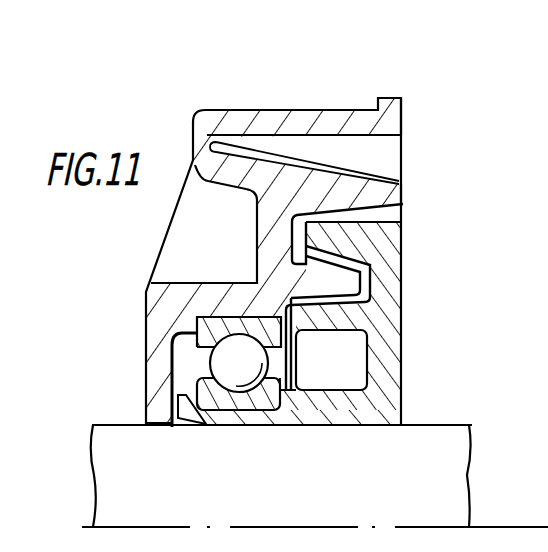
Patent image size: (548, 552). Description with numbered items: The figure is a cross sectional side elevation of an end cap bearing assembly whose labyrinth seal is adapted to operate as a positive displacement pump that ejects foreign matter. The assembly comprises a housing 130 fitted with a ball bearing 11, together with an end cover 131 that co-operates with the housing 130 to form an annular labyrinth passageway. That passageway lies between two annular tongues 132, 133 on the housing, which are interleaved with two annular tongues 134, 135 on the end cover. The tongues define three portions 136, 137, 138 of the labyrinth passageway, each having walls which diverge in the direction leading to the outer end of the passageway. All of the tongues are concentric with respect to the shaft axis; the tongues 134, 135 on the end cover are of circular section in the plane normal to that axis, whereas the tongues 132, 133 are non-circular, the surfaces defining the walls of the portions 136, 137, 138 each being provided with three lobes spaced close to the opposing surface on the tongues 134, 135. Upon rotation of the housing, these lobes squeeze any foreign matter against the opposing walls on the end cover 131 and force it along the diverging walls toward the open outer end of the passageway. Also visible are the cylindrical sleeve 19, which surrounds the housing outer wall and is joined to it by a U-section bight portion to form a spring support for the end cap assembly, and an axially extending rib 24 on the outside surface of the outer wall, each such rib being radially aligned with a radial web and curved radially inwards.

The ball bearing 11 is at (108, 364).
The cylindrical sleeve 19 is at (297, 110).
The axially extending rib 24 is at (303, 149).
The housing 130 is at (105, 319).
The end cover 131 is at (390, 386).
The annular tongue 132 is at (392, 183).
The annular tongue 133 is at (390, 290).
The annular tongue 134 is at (392, 242).
The annular tongue 135 is at (325, 313).
The labyrinth passageway portion 136 is at (393, 207).
The labyrinth passageway portion 137 is at (390, 264).
The labyrinth passageway portion 138 is at (390, 320).